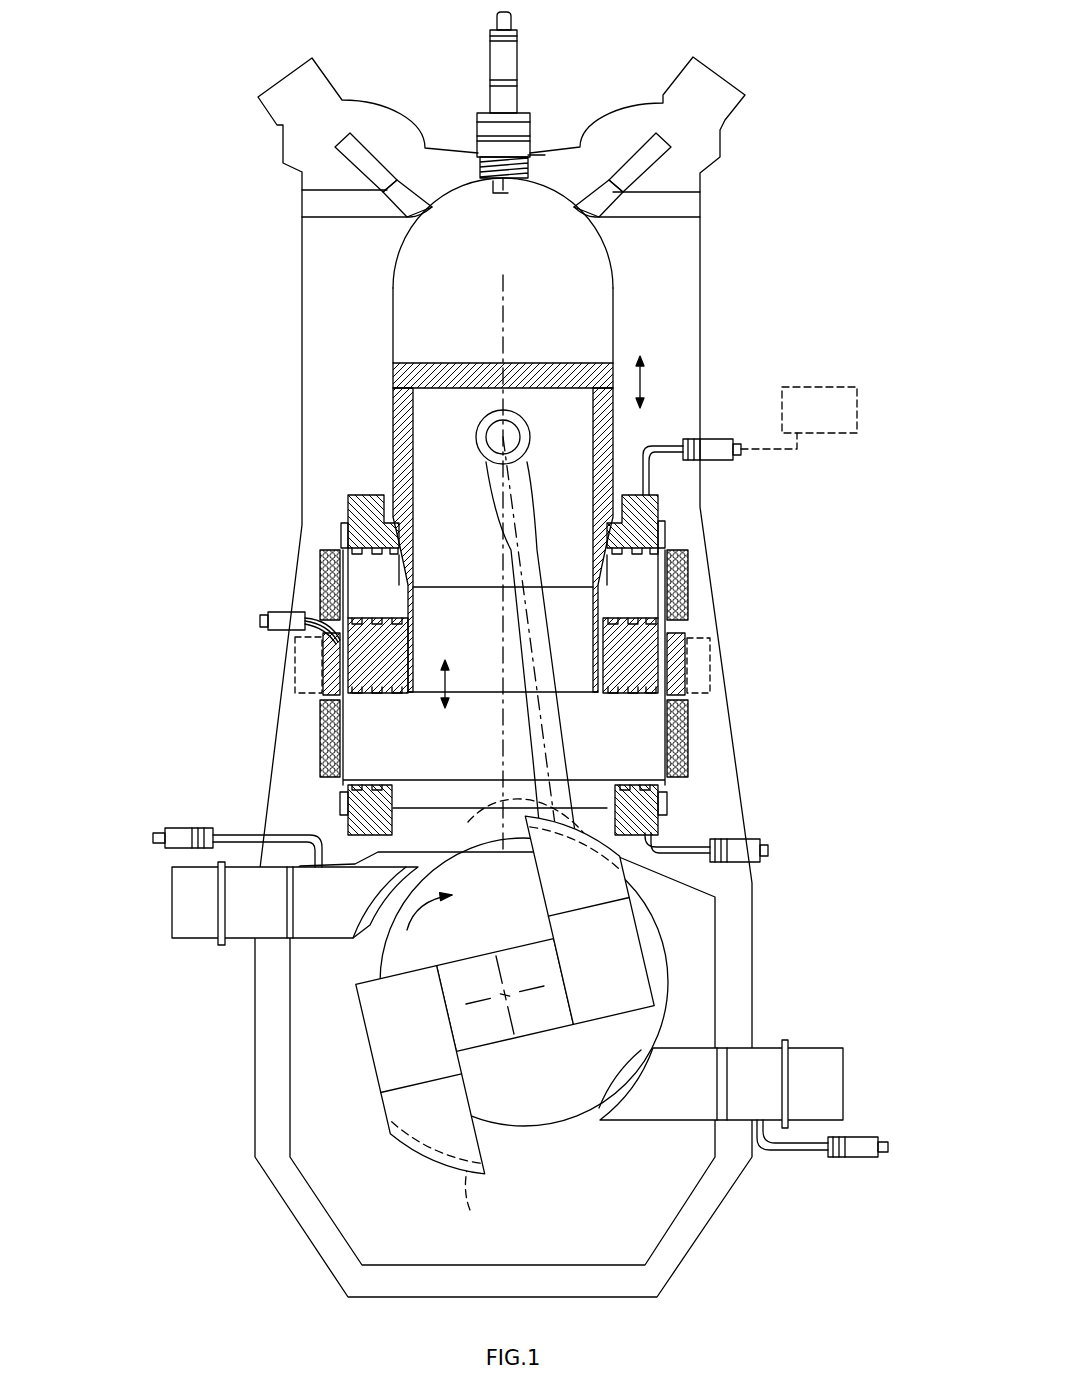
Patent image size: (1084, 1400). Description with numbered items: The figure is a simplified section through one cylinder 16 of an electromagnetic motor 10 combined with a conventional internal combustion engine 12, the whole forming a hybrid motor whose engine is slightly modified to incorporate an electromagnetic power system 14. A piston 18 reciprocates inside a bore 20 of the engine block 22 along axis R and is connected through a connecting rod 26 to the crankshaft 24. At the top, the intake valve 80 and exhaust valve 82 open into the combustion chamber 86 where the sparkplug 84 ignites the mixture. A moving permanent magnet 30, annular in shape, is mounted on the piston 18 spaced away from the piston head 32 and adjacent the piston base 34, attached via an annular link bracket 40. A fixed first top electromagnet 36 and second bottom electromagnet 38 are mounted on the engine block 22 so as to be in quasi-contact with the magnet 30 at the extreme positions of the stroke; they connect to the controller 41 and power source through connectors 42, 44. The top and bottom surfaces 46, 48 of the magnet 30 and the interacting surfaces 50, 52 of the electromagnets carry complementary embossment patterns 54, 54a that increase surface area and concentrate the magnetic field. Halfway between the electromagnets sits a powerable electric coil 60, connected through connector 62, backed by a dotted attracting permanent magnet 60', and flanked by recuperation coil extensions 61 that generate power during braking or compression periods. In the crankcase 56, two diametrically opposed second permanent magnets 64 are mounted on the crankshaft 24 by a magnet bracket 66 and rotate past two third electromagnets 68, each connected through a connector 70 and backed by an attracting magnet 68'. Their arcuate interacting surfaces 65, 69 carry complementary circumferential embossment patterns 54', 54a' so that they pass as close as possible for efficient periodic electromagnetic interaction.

The electromagnetic motor 10 is at (243, 212).
The internal combustion engine 12 is at (705, 342).
The electromagnetic power system 14 is at (665, 500).
The cylinder 16 is at (632, 312).
The piston 18 is at (415, 478).
The bore 20 is at (393, 328).
The engine block 22 is at (303, 388).
The crankshaft 24 is at (530, 1040).
The connecting rod 26 is at (530, 733).
The moving permanent magnet 30 is at (360, 665).
The piston head 32 is at (443, 390).
The piston base 34 is at (412, 570).
The first top electromagnetic coil magnet 36 is at (367, 495).
The second bottom electromagnetic coil magnet 38 is at (342, 812).
The annular link bracket 40 is at (433, 700).
The controller 41 is at (860, 412).
The connector 42 is at (708, 440).
The connector 44 is at (760, 866).
The top surface of permanent magnet 46 is at (617, 613).
The bottom surface of permanent magnet 48 is at (613, 700).
The interacting surface of top electromagnet 50 is at (397, 557).
The interacting surface of bottom electromagnet 52 is at (370, 780).
The embossment pattern 54 is at (718, 663).
The complementary embossment pattern 54a is at (746, 660).
The circumferential embossment pattern 54' is at (500, 1018).
The complementary circumferential embossment pattern 54a' is at (513, 1000).
The crankcase 56 is at (290, 1050).
The powerable electric coil 60 is at (287, 661).
The attracting permanent magnet 60' is at (268, 665).
The recuperation electric coil extensions 61 is at (320, 567).
The connector 62 is at (300, 613).
The second moving permanent magnet 64 is at (614, 876).
The interacting surface of second magnet 65 is at (566, 826).
The magnet bracket 66 is at (460, 970).
The third fixed electromagnetic coil magnet 68 is at (507, 995).
The attracting permanent magnet 68' is at (463, 993).
The interacting surface of third electromagnet 69 is at (370, 928).
The connector 70 is at (178, 827).
The intake valve 80 is at (420, 208).
The exhaust valve 82 is at (580, 222).
The sparkplug 84 is at (493, 60).
The combustion chamber 86 is at (535, 215).